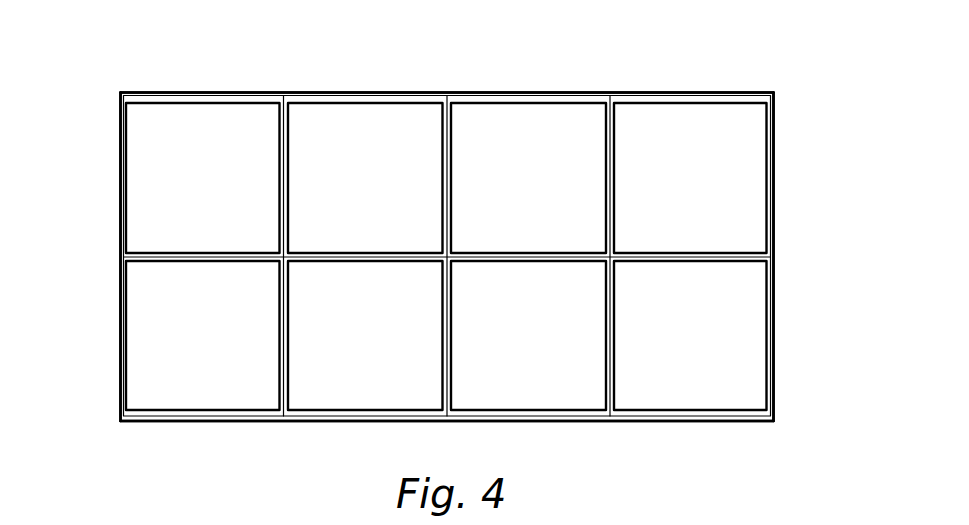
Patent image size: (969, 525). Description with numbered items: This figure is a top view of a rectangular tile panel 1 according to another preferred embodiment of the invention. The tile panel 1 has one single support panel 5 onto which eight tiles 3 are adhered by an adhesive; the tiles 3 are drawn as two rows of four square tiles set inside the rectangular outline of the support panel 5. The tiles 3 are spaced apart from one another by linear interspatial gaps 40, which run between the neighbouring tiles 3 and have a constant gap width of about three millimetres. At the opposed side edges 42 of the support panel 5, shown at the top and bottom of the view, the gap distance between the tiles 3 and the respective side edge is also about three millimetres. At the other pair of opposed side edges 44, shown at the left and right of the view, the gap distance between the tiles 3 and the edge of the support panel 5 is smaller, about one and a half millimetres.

The tile panel 1 is at (99, 82).
The tiles 3 is at (210, 191).
The support panel 5 is at (685, 92).
The linear interspatial gaps 40 is at (590, 175).
The opposed side edges 42 is at (222, 92).
The other pair of opposed side edges 44 is at (775, 181).